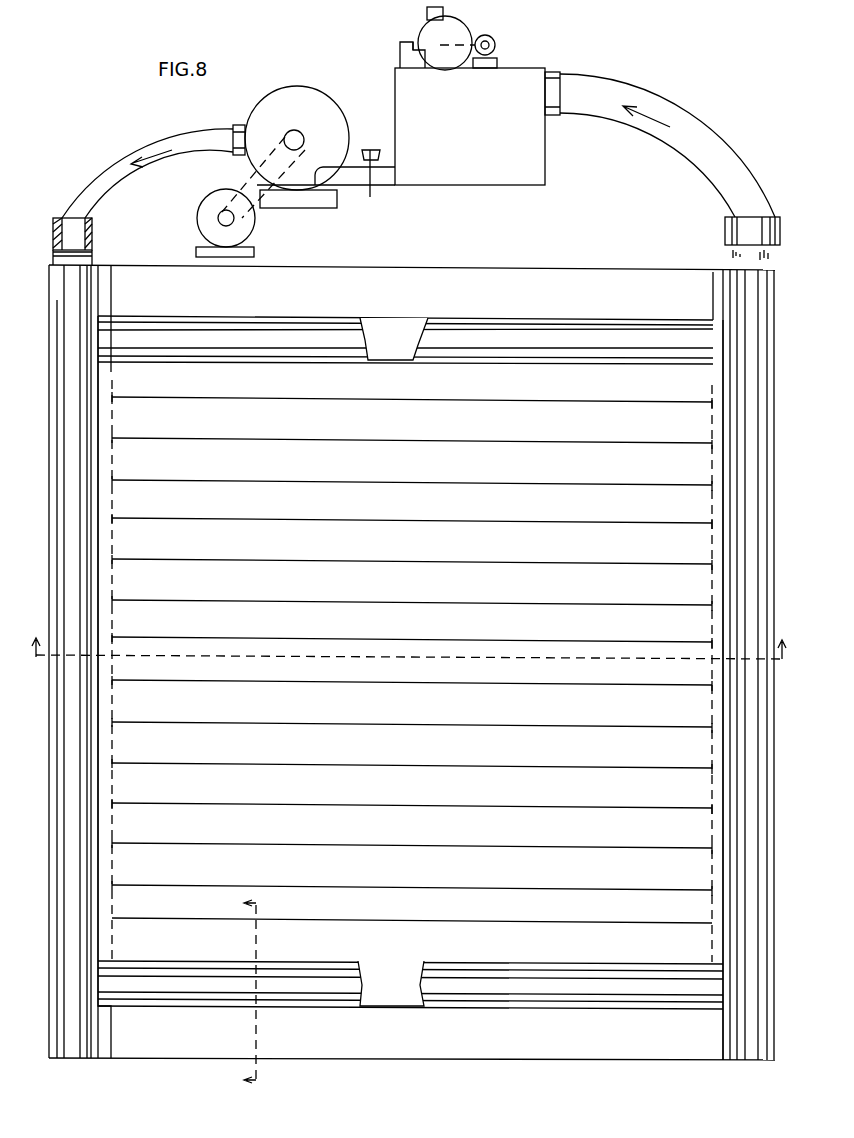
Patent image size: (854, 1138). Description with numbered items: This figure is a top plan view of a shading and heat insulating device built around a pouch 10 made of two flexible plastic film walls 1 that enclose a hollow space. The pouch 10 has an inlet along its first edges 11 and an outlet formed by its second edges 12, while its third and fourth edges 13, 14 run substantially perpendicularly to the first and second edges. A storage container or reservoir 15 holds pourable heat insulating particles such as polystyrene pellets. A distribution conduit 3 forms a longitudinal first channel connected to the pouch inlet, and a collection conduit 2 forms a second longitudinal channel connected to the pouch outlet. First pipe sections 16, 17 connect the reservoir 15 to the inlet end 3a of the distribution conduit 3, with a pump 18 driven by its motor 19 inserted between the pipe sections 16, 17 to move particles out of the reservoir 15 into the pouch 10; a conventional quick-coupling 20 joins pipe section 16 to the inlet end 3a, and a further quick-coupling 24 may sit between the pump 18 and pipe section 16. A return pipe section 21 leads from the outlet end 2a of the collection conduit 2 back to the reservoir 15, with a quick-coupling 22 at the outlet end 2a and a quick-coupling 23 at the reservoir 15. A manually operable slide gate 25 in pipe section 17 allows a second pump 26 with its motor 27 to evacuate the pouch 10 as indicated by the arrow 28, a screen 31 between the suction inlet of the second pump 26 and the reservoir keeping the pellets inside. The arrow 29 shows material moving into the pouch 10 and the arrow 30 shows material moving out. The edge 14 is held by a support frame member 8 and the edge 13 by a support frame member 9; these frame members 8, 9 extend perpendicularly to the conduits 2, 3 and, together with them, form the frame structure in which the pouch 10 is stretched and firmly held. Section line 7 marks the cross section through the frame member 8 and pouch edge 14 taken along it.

The walls 1 is at (410, 639).
The collection conduit 2 is at (752, 1050).
The outlet end of the collection conduit 2a is at (730, 262).
The distribution conduit 3 is at (73, 1040).
The inlet end of the distribution conduit 3a is at (85, 264).
The section line 7- 7 is at (239, 995).
The support frame member 8 is at (350, 1043).
The support frame member 9 is at (516, 290).
The pouch 10 is at (433, 756).
The first edges 11 is at (100, 820).
The second edges 12 is at (715, 830).
The third edge 13 is at (403, 338).
The fourth edge 14 is at (407, 990).
The storage container 15 is at (466, 178).
The first pipe section 16 is at (160, 141).
The first pipe section 17 is at (388, 178).
The pump 18 is at (328, 122).
The motor 19 is at (210, 207).
The quick-coupling 20 is at (93, 228).
The return pipe section 21 is at (607, 110).
The quick-coupling 22 is at (725, 230).
The quick-coupling 23 is at (553, 117).
The quick-coupling 24 is at (243, 122).
The slide gate 25 is at (383, 153).
The second pump 26 is at (446, 25).
The motor 27 is at (496, 45).
The arrow 28 is at (426, 3).
The arrow 29 is at (155, 155).
The arrow 30 is at (648, 112).
The screen 31 is at (410, 68).